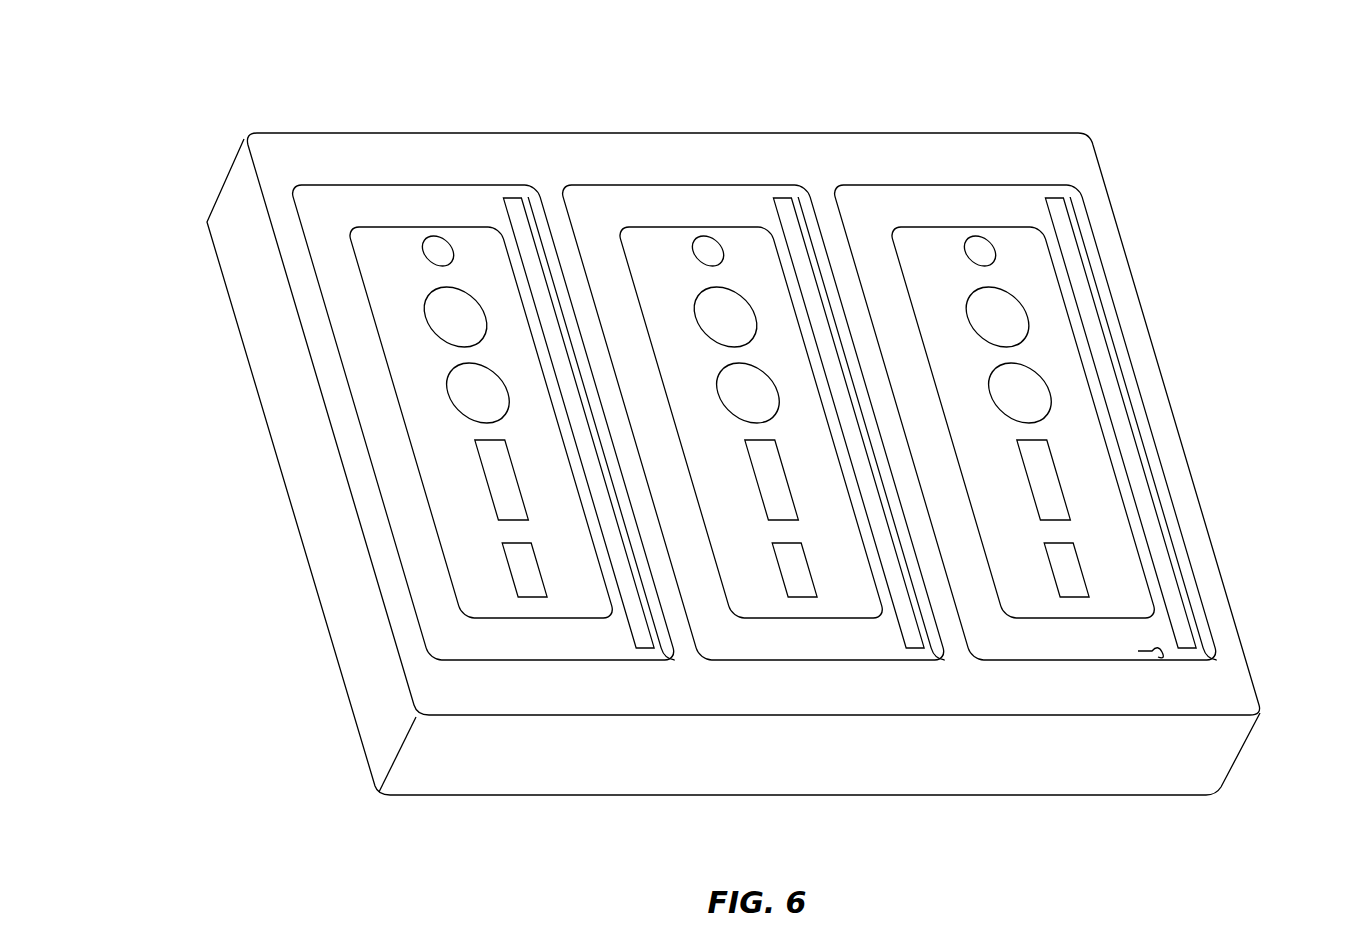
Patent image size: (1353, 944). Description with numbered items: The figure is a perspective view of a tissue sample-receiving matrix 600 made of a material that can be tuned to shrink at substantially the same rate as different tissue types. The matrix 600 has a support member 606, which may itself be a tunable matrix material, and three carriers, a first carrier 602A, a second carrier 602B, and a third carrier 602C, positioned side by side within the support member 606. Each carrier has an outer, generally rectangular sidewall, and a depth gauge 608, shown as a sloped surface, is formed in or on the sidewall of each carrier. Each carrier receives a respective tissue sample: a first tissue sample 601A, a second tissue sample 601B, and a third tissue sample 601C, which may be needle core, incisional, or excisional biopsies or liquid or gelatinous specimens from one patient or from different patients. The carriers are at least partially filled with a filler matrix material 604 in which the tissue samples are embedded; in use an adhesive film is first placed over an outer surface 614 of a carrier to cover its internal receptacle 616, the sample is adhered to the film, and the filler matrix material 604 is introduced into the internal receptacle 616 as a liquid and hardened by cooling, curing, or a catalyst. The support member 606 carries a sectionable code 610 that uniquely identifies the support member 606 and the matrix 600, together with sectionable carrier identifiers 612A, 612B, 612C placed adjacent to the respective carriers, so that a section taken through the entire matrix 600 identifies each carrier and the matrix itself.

The tissue sample-receiving matrix 600 is at (636, 72).
The support member 606 is at (1045, 152).
The sectionable code 610 is at (683, 127).
The first carrier 602A is at (977, 207).
The second carrier 602B is at (866, 645).
The third carrier 602C is at (345, 273).
The filler matrix material 604 is at (1078, 421).
The first tissue sample 601A is at (1015, 318).
The second tissue sample 601B is at (713, 253).
The third tissue sample 601C is at (497, 487).
The depth gauge 608 is at (523, 224).
The internal receptacle 616 is at (1045, 268).
The outer surface 614 is at (1160, 657).
The sectionable carrier identifier 612A is at (1090, 713).
The sectionable carrier identifier 612B is at (821, 714).
The sectionable carrier identifier 612C is at (538, 697).